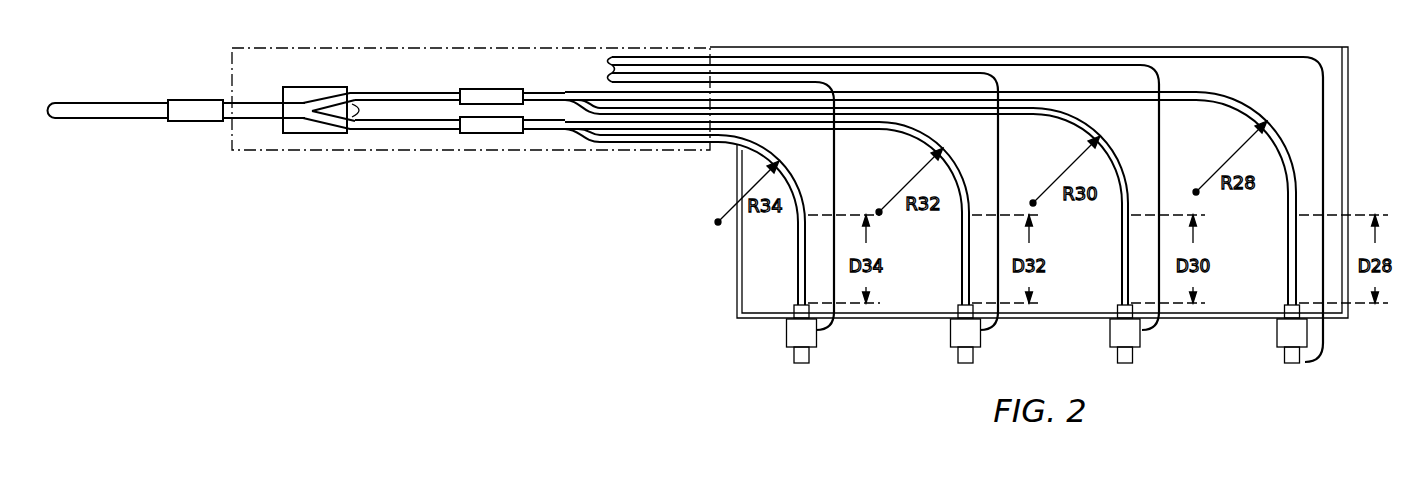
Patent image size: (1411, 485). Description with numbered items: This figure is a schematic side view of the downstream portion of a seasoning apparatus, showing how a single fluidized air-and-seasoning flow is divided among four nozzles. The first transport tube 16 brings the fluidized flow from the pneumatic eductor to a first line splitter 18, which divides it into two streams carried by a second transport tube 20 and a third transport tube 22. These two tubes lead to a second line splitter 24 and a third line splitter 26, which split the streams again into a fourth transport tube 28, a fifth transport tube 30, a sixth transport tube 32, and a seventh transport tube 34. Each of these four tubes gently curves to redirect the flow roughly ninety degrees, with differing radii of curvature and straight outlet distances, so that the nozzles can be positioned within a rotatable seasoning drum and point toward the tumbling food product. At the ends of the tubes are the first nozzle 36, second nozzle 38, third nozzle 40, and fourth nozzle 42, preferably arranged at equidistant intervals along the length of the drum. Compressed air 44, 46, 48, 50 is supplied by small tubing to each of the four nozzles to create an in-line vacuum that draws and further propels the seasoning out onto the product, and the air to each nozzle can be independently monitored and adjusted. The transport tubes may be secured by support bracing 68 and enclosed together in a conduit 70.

The first transport tube 16 is at (128, 103).
The first line splitter 18 is at (313, 133).
The second transport tube 20 is at (425, 92).
The third transport tube 22 is at (443, 129).
The second line splitter 24 is at (573, 92).
The third line splitter 26 is at (565, 135).
The fourth transport tube 28 is at (1238, 112).
The fifth transport tube 30 is at (957, 113).
The sixth transport tube 32 is at (625, 130).
The seventh transport tube 34 is at (663, 143).
The first nozzle 36 is at (1277, 333).
The second nozzle 38 is at (1110, 338).
The third nozzle 40 is at (950, 338).
The fourth nozzle 42 is at (786, 337).
The compressed air for first nozzle 44 is at (1322, 128).
The compressed air for second nozzle 46 is at (1160, 150).
The compressed air for third nozzle 48 is at (1000, 160).
The compressed air for fourth nozzle 50 is at (836, 172).
The support bracing 68 is at (736, 260).
The conduit 70 is at (310, 48).